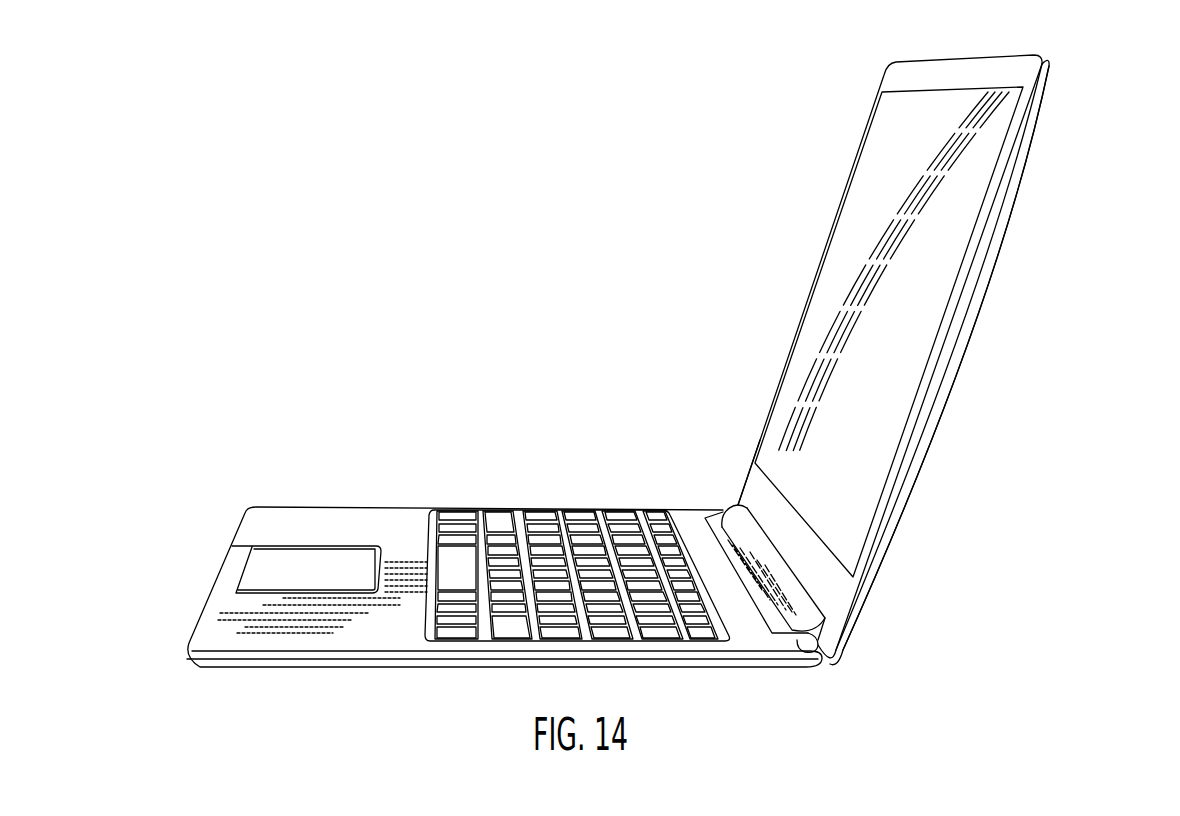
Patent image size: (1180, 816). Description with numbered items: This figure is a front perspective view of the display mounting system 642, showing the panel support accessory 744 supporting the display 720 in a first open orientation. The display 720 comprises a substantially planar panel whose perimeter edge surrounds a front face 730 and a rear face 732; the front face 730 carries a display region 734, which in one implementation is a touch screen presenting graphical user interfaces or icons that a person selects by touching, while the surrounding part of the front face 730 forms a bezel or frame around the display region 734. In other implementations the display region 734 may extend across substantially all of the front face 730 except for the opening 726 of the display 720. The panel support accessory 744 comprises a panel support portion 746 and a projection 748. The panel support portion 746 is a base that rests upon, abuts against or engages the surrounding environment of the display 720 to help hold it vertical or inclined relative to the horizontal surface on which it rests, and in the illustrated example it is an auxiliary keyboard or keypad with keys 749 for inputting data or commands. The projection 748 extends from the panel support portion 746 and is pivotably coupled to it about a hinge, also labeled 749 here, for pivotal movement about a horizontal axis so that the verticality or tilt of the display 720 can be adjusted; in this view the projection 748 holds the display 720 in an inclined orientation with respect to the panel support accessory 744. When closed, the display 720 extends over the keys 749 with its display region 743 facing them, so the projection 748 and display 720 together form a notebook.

The display mounting system 642 is at (679, 153).
The front face 730 is at (850, 77).
The rear face 732 is at (1107, 119).
The display 720 is at (1008, 219).
The display region 734 is at (910, 335).
The display region 743 is at (903, 446).
The opening 726 is at (752, 483).
The panel support accessory 744 is at (274, 504).
The panel support portion 746 is at (362, 505).
The keys 749 is at (538, 518).
The projection 748 is at (788, 580).